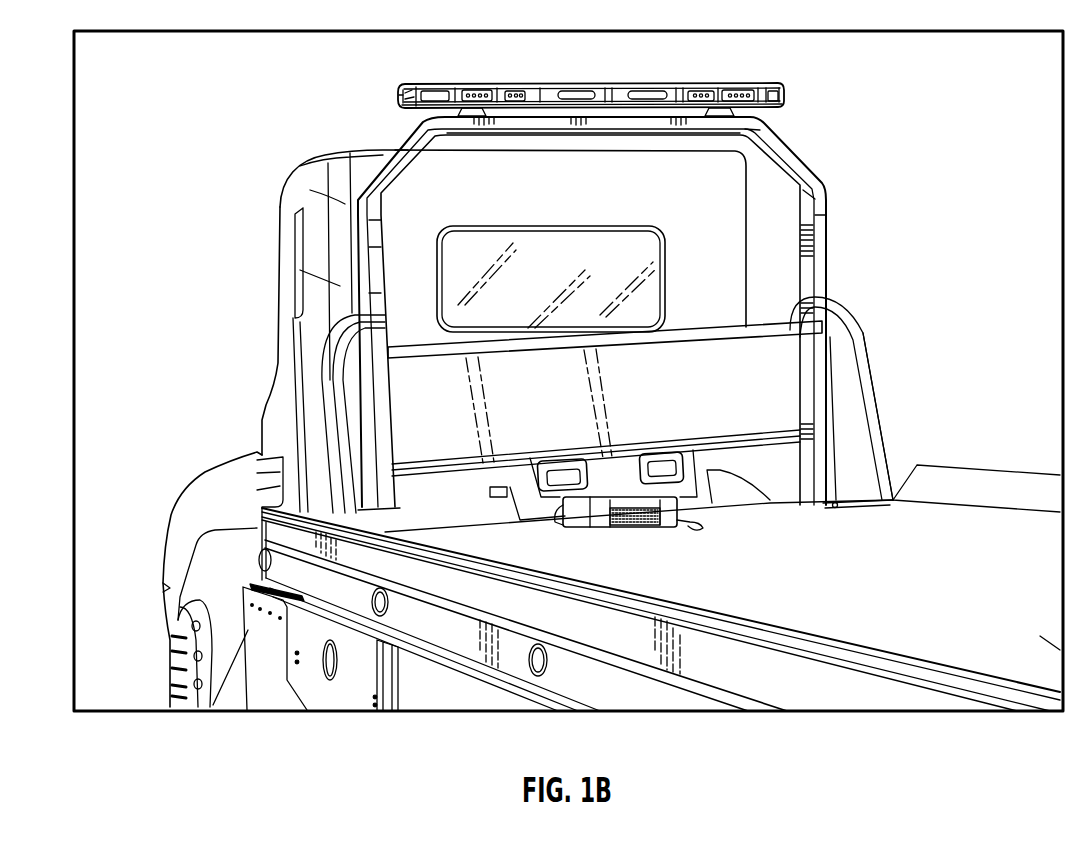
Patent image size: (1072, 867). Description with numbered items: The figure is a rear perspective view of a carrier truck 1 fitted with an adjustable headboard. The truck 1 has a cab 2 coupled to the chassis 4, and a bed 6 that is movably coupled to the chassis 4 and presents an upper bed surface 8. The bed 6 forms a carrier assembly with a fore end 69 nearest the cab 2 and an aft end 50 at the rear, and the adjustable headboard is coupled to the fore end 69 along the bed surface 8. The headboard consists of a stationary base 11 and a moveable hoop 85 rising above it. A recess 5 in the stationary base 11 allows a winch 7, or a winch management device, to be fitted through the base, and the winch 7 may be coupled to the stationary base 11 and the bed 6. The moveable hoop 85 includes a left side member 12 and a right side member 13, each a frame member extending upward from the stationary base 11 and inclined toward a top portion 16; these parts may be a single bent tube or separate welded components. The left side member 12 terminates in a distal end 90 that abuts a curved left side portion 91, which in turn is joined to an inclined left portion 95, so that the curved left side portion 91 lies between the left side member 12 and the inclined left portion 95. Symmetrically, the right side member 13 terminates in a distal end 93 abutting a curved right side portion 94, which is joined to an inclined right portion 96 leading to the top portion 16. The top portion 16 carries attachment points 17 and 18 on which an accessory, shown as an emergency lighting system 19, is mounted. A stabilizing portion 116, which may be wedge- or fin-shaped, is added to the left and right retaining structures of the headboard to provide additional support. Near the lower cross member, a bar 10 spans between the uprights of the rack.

The truck 1 is at (310, 162).
The cab 2 is at (278, 360).
The chassis 4 is at (242, 642).
The recess 5 is at (724, 503).
The bed 6 is at (820, 652).
The winch 7 is at (643, 521).
The bed surface 8 is at (911, 587).
The cross bar 10 is at (699, 327).
The stationary base 11 is at (772, 483).
The left side member 12 is at (363, 293).
The right side member 13 is at (831, 256).
The top portion 16 is at (527, 135).
The attachment point 17 is at (438, 96).
The attachment point 18 is at (718, 119).
The emergency lighting system 19 is at (629, 84).
The aft end 50 is at (1060, 645).
The fore end 69 is at (838, 508).
The moveable hoop 85 is at (841, 149).
The distal end 90 is at (363, 247).
The curved left side portion 91 is at (357, 208).
The distal end 93 is at (828, 219).
The curved right side portion 94 is at (823, 190).
The inclined left portion 95 is at (388, 154).
The inclined right portion 96 is at (777, 132).
The stabilizing portion 116 is at (886, 465).